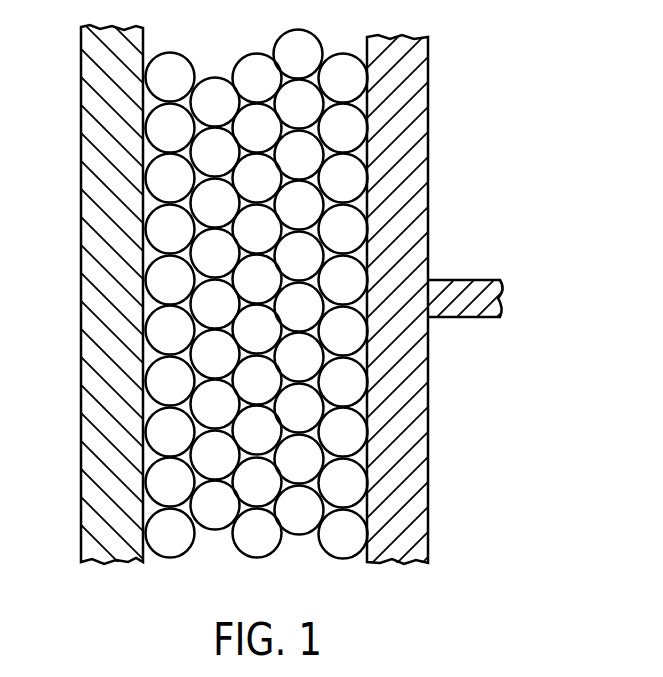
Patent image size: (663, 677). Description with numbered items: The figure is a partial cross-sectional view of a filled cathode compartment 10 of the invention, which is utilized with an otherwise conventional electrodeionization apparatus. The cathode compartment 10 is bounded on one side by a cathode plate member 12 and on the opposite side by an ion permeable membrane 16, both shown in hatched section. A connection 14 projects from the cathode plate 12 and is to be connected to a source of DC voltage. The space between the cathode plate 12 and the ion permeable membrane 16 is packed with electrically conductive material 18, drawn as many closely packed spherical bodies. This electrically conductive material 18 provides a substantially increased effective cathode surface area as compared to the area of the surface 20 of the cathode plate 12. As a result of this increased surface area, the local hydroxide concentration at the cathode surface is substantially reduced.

The cathode compartment 10 is at (483, 105).
The cathode plate member 12 is at (428, 470).
The connection 14 is at (472, 280).
The ion permeable membrane 16 is at (92, 197).
The electrically conductive material 18 is at (298, 48).
The surface 20 is at (365, 98).